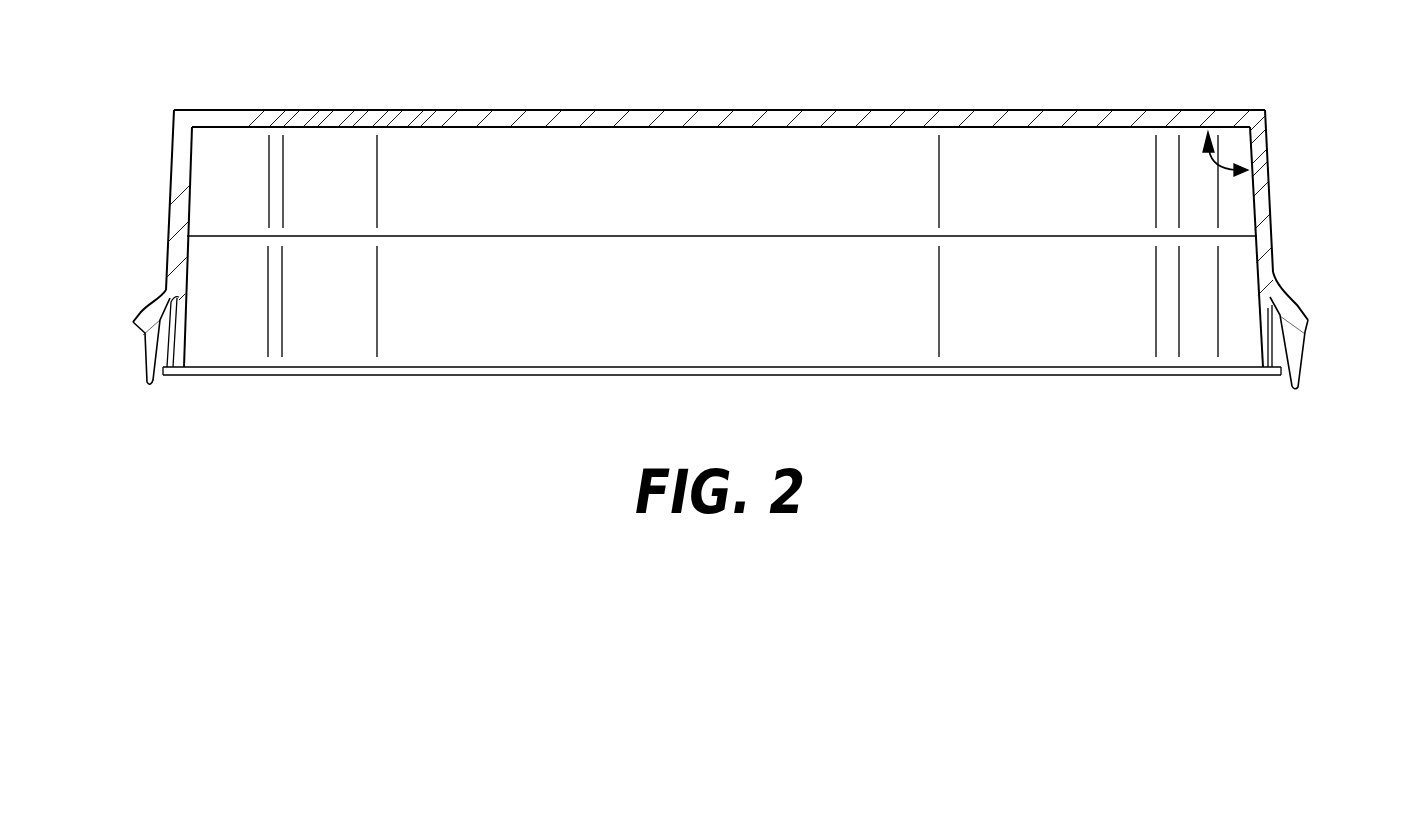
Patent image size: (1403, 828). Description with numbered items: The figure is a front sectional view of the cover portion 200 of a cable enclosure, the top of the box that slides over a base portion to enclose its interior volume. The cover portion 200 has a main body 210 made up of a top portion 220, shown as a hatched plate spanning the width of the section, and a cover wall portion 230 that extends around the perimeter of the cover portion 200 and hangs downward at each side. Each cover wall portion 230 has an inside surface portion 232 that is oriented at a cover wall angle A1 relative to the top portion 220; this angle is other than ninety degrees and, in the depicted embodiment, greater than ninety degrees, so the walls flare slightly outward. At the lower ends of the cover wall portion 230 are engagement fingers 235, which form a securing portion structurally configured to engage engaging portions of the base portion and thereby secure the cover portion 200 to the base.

The cover portion 200 is at (1132, 122).
The main body 210 is at (1262, 158).
The top portion 220 is at (712, 118).
The cover wall portion 230 is at (177, 239).
The inside surface portion 232 is at (188, 195).
The engagement finger 235 is at (145, 335).
The cover wall angle A1 is at (1223, 164).